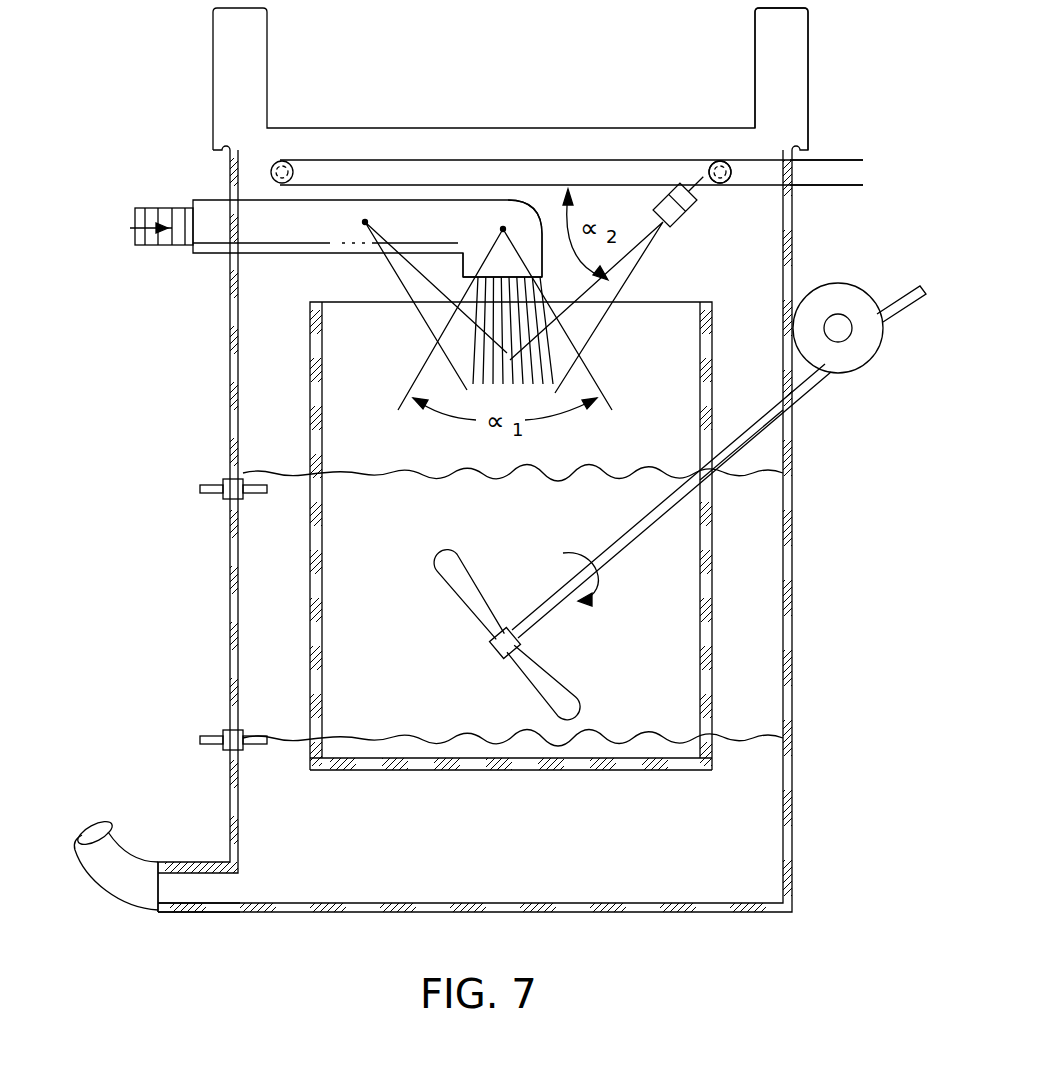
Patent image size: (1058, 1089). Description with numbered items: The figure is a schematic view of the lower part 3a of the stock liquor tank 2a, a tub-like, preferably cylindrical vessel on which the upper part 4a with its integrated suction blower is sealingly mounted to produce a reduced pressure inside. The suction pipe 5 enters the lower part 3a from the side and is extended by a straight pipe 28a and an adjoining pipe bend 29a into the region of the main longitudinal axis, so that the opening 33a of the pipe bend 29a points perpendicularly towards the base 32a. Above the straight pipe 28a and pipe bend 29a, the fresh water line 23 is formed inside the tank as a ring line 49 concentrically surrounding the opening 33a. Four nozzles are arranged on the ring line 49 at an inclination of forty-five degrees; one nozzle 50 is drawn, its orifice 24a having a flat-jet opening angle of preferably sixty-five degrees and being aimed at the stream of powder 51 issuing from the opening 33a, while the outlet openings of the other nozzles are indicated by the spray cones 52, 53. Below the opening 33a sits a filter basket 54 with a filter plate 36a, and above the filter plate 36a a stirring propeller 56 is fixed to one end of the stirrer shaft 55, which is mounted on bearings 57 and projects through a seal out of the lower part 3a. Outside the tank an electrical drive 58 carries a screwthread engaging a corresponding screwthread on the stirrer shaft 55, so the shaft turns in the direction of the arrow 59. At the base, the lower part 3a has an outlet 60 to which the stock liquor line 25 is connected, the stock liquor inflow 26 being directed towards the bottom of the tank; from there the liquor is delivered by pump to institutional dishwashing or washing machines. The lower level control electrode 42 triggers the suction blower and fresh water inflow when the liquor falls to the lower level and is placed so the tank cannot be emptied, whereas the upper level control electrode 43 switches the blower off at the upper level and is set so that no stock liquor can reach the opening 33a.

The stock liquor tank 2a is at (212, 186).
The lower part 3a is at (228, 380).
The upper part 4a is at (802, 70).
The suction pipe 5 is at (180, 247).
The fresh water line 23 is at (828, 168).
The orifice 24a is at (662, 228).
The stock liquor line 25 is at (110, 850).
The stock liquor inflow 26 is at (167, 895).
The straight pipe 28a is at (400, 207).
The pipe bend 29a is at (533, 212).
The base 32a is at (415, 913).
The opening 33a is at (480, 275).
The filter plate 36a is at (692, 770).
The lower level control electrode 42 is at (207, 733).
The upper level control electrode 43 is at (207, 483).
The ring line 49 is at (483, 167).
The nozzle 50 is at (668, 185).
The stream of powder 51 is at (490, 325).
The spray cone 52 is at (503, 228).
The spray cone 53 is at (365, 222).
The filter basket 54 is at (707, 580).
The stirrer shaft 55 is at (748, 443).
The stirring propeller 56 is at (560, 720).
The bearings 57 is at (800, 402).
The electrical drive 58 is at (818, 292).
The arrow 59 is at (600, 597).
The outlet 60 is at (200, 895).